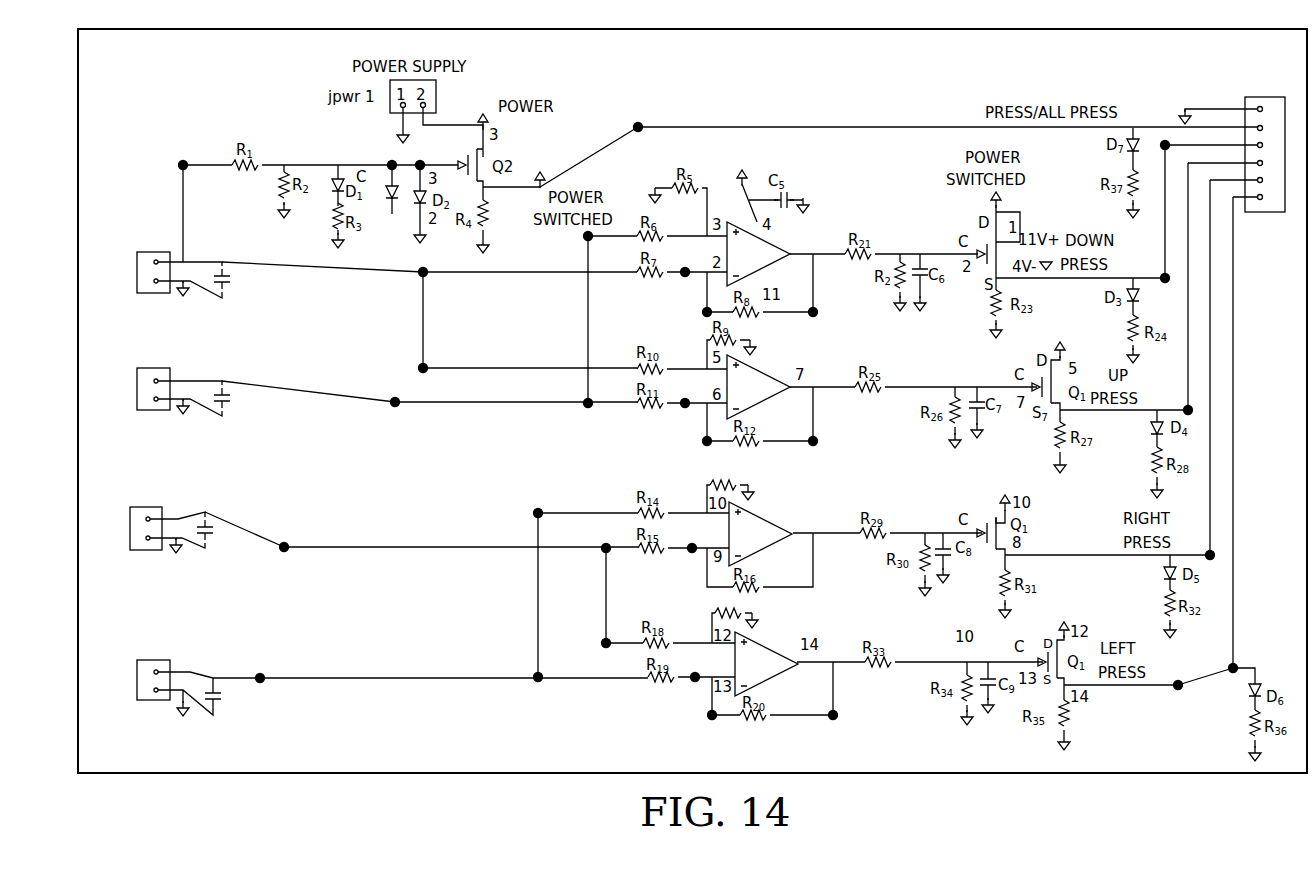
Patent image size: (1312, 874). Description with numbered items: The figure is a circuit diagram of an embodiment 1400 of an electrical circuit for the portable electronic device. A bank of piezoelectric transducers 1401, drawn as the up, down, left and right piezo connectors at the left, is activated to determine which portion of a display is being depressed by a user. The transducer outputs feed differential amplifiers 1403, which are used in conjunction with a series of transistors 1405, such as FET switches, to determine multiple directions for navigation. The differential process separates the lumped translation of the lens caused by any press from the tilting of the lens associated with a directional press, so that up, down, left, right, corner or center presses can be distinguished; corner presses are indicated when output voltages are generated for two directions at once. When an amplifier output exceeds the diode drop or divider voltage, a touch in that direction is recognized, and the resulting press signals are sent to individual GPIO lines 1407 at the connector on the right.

The embodiment of an electrical circuit 1400 is at (1306, 21).
The bank of piezoelectric transducers 1401 is at (137, 262).
The differential amplifiers 1403 is at (770, 247).
The series of transistors 1405 is at (985, 268).
The individual GPIO lines 1407 is at (1265, 212).